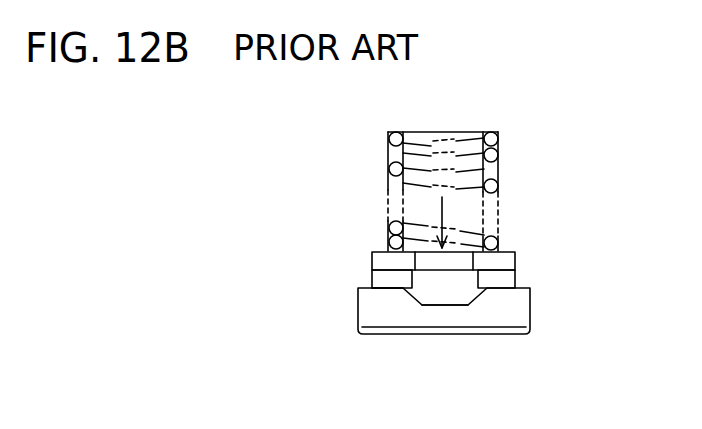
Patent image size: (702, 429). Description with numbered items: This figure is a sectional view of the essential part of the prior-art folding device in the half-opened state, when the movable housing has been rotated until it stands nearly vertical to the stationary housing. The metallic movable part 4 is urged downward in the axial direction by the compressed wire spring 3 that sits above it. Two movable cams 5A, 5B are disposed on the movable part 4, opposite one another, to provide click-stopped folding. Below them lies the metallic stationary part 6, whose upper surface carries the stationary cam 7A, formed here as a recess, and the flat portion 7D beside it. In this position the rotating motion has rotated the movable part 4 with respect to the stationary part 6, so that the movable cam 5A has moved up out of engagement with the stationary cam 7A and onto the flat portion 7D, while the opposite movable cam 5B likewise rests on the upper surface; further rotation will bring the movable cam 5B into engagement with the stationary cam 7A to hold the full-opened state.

The spring 3 is at (385, 153).
The movable part 4 is at (398, 263).
The movable cam 5A is at (382, 280).
The movable cam 5B is at (507, 279).
The stationary part 6 is at (512, 312).
The flat portion 7D is at (386, 289).
The stationary cam 7A is at (444, 304).